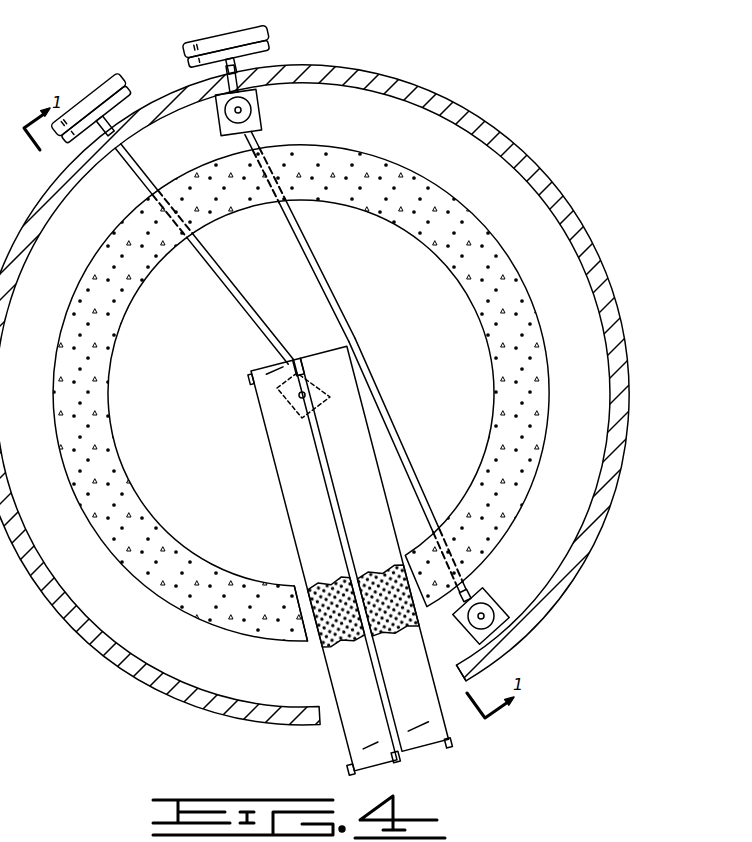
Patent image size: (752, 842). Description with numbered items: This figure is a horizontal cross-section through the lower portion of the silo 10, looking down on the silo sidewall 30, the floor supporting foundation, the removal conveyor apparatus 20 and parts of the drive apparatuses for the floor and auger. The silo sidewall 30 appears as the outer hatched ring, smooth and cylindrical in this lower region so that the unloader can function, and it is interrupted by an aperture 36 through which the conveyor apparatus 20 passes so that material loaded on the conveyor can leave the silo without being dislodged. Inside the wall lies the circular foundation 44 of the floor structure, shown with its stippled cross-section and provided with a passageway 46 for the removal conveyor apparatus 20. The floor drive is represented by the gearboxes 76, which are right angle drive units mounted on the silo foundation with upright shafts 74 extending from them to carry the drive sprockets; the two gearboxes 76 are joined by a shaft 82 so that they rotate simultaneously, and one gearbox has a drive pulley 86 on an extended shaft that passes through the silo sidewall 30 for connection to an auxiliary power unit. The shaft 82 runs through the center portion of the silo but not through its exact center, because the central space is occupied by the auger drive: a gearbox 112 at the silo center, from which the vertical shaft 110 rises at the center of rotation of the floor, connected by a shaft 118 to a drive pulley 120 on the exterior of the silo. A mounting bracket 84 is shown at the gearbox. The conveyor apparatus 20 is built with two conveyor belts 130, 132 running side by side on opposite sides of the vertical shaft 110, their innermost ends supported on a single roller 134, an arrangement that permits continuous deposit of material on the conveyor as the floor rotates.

The silo 10 is at (376, 421).
The removal conveyor apparatus 20 is at (306, 561).
The silo sidewall 30 is at (604, 290).
The aperture 36 is at (462, 684).
The foundation 44 is at (301, 393).
The passageway 46 is at (296, 589).
The upright shafts 74 is at (245, 109).
The gearboxes 76 is at (258, 120).
The shaft 82 is at (312, 267).
The mounting bracket 84 is at (217, 112).
The drive pulley 86 is at (218, 38).
The vertical shaft 110 is at (300, 397).
The gearbox 112 is at (276, 389).
The shaft 118 is at (238, 306).
The drive pulley 120 is at (84, 96).
The conveyor belt 130 is at (286, 503).
The conveyor belt 132 is at (382, 526).
The single roller 134 is at (248, 377).